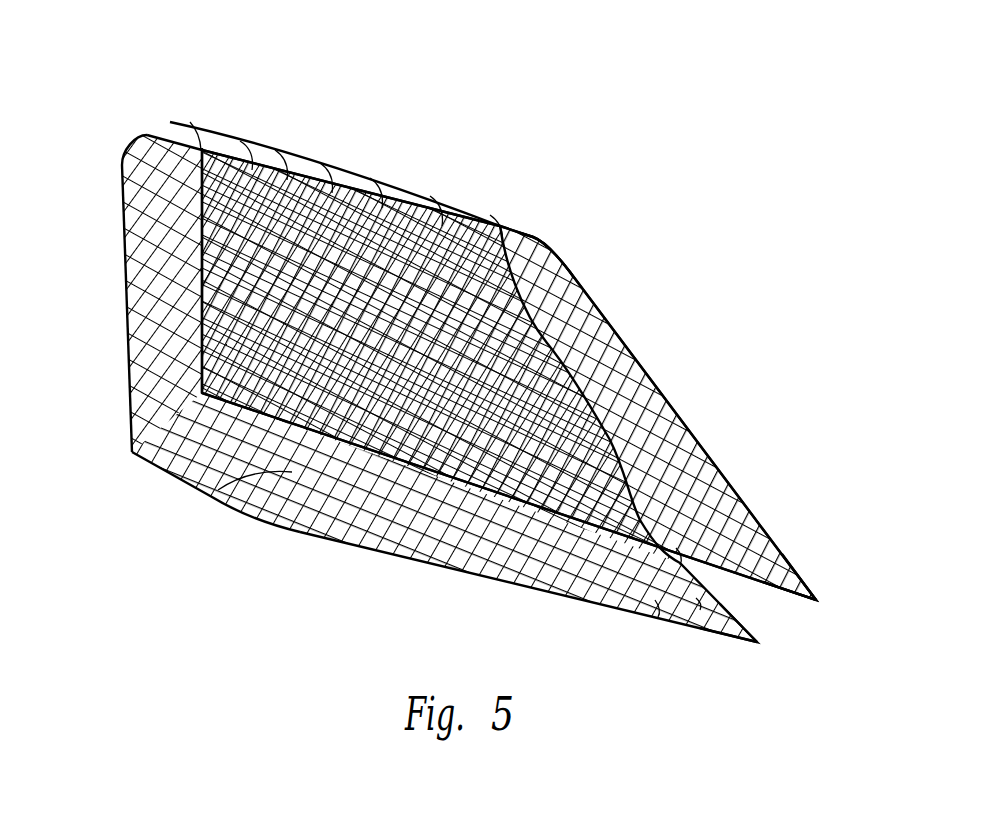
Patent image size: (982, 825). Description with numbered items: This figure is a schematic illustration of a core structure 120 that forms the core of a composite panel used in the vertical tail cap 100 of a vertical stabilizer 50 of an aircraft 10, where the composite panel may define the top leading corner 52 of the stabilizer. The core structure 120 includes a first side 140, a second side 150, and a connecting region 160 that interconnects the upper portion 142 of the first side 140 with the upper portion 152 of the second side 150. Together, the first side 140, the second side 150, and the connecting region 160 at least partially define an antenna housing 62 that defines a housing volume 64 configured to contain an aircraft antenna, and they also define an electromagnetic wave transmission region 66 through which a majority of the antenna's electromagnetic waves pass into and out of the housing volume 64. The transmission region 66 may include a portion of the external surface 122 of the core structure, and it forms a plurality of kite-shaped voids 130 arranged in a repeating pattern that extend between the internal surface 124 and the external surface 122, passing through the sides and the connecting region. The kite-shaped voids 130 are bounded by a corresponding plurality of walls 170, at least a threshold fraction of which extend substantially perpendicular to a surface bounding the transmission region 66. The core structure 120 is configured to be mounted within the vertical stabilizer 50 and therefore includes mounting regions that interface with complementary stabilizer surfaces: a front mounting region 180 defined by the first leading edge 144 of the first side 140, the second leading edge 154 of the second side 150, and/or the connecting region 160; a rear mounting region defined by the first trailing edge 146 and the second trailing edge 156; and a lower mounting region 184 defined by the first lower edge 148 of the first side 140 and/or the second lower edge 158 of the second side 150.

The aircraft 10 is at (803, 150).
The vertical stabilizer 50 is at (794, 228).
The top leading corner 52 is at (567, 243).
The antenna housing 62 is at (95, 150).
The housing volume 64 is at (700, 497).
The electromagnetic wave transmission region 66 is at (395, 435).
The vertical tail cap 100 is at (779, 291).
The core structure 120 is at (228, 112).
The external surface 122 is at (165, 303).
The internal surface 124 is at (705, 455).
The kite-shaped voids 130 is at (218, 490).
The first side 140 is at (143, 397).
The upper portion of first side 142 is at (110, 230).
The first leading edge 144 is at (735, 598).
The first trailing edge 146 is at (132, 427).
The first lower edge 148 is at (590, 608).
The second side 150 is at (637, 355).
The upper portion of second side 152 is at (582, 270).
The second leading edge 154 is at (670, 398).
The second trailing edge 156 is at (122, 195).
The second lower edge 158 is at (797, 600).
The connecting region 160 is at (360, 168).
The walls 170 is at (700, 610).
The front mounting region 180 is at (648, 310).
The lower mounting region 184 is at (420, 615).